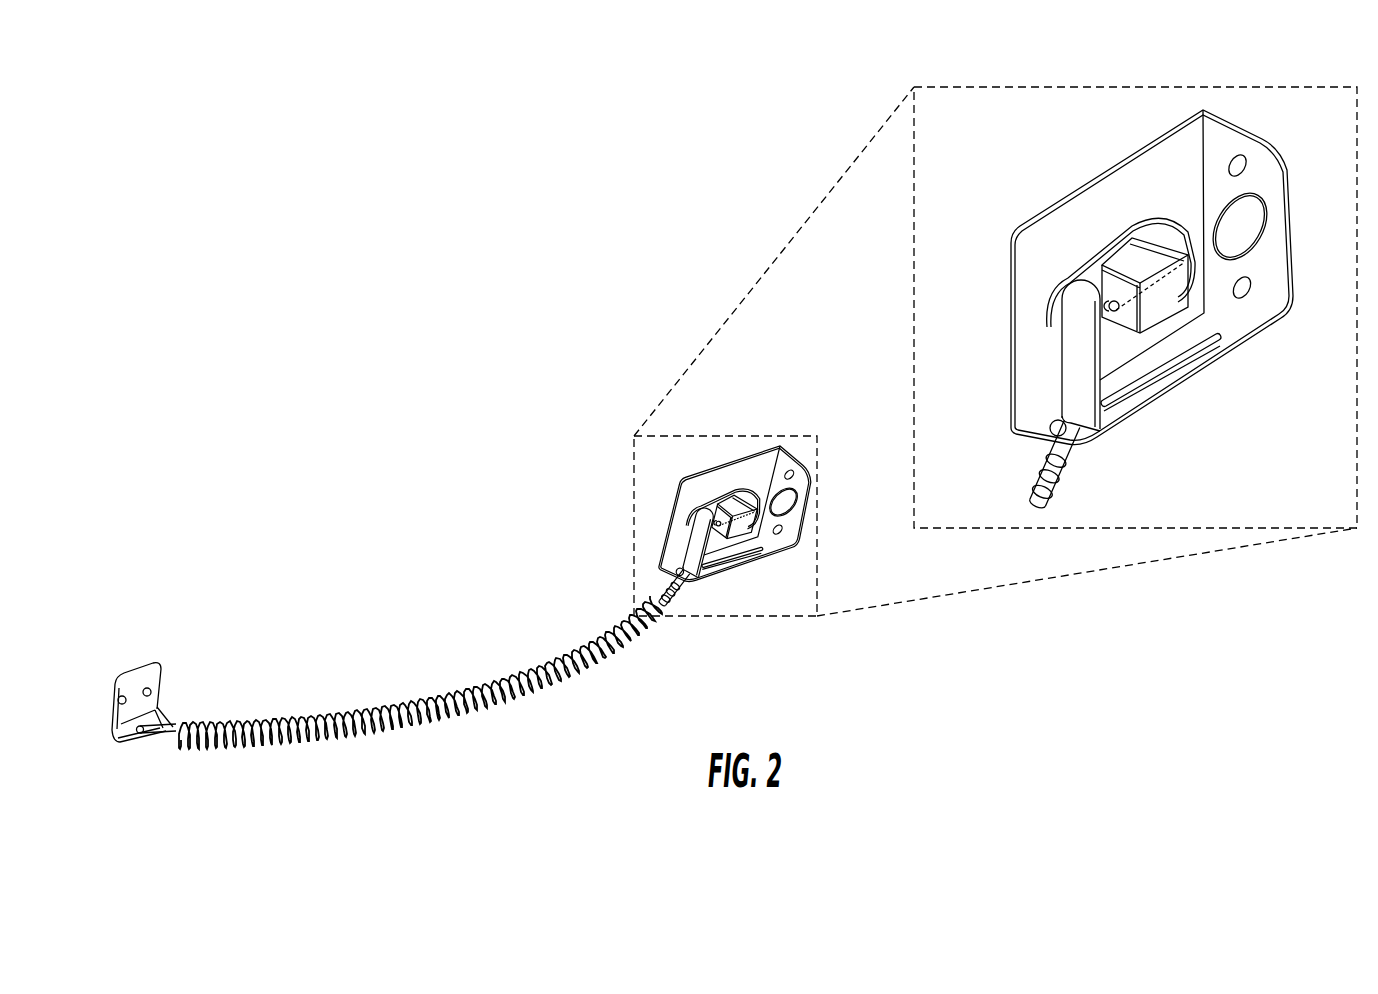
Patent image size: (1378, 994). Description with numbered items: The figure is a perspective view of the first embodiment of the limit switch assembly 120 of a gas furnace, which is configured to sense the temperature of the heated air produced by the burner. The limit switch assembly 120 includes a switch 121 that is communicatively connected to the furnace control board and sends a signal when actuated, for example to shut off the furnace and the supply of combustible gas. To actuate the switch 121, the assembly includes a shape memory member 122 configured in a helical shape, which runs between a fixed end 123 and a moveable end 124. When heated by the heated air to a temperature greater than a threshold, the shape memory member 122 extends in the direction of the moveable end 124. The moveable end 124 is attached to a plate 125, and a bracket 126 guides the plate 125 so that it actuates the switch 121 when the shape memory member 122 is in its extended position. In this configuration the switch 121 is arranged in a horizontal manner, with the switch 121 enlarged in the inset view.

The limit switch assembly 120 is at (323, 505).
The switch 121 is at (1188, 307).
The shape memory member 122 is at (485, 692).
The fixed end 123 is at (157, 712).
The moveable end 124 is at (1066, 430).
The plate 125 is at (1077, 343).
The bracket 126 is at (1178, 193).